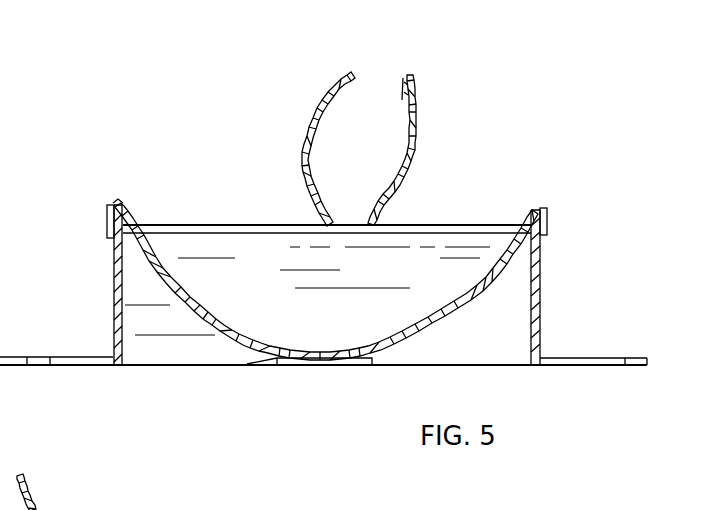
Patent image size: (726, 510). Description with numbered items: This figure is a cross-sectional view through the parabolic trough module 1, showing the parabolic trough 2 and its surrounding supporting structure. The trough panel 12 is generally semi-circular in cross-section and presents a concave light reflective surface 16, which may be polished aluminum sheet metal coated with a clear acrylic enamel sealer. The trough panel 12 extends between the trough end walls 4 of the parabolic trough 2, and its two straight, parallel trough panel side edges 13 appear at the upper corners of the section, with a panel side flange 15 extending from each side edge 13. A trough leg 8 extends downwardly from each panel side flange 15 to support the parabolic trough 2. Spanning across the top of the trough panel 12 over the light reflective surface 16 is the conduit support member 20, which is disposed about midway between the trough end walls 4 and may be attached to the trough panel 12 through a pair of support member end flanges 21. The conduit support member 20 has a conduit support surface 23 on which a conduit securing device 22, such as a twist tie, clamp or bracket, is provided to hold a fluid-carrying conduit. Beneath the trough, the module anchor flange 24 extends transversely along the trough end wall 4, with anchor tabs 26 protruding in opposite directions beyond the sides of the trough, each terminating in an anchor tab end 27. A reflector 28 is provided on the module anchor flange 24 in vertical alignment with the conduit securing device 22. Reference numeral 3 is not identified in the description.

The parabolic trough module 1 is at (141, 96).
The parabolic trough 2 is at (545, 240).
The side wall 3 is at (113, 257).
The trough end wall 4 is at (445, 280).
The trough leg 8 is at (113, 285).
The trough panel 12 is at (165, 256).
The trough panel side edge 13 is at (114, 202).
The panel side flange 15 is at (107, 217).
The light reflective surface 16 is at (190, 290).
The conduit support member 20 is at (405, 228).
The support member end flange 21 is at (145, 237).
The conduit securing device 22 is at (410, 150).
The conduit support surface 23 is at (430, 225).
The module anchor flange 24 is at (107, 380).
The anchor tab 26 is at (50, 357).
The anchor tab end 27 is at (625, 358).
The reflector 28 is at (247, 363).